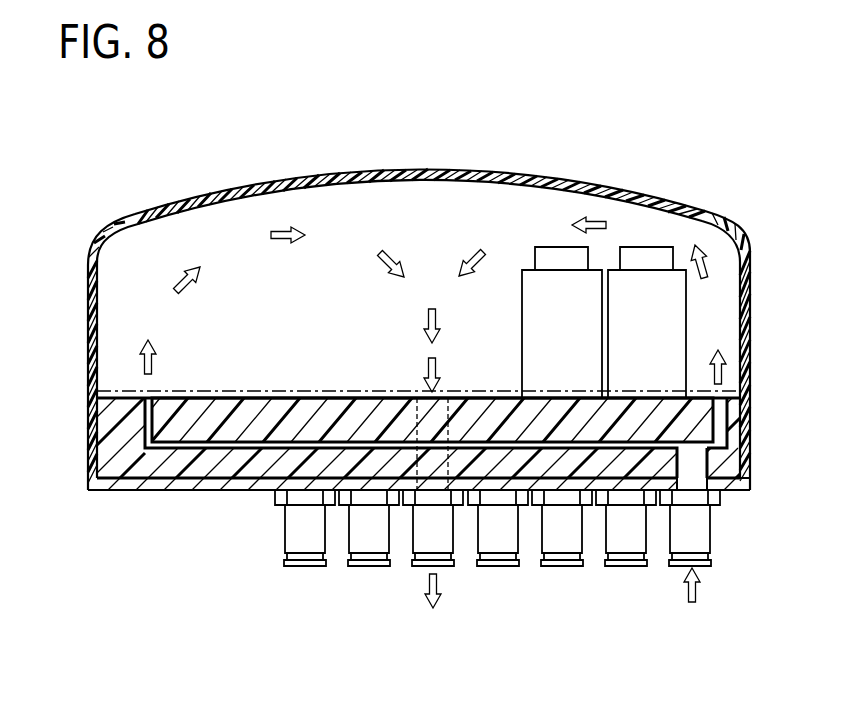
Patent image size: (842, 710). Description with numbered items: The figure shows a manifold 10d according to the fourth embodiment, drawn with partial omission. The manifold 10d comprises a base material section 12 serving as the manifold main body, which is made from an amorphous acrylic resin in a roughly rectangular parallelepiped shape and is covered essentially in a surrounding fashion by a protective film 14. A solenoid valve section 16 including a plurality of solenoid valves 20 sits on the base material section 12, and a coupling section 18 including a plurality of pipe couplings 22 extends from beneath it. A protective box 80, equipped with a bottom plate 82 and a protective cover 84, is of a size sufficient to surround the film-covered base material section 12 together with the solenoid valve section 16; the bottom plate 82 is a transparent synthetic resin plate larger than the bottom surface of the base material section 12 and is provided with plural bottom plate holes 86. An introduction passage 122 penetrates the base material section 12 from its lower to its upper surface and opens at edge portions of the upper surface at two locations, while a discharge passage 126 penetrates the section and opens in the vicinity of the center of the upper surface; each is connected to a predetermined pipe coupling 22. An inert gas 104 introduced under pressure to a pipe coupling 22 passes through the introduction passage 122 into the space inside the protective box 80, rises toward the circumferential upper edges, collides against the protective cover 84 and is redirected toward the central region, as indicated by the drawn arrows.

The manifold 10d is at (277, 155).
The protective box 80 is at (612, 146).
The solenoid valve section 16 is at (717, 253).
The protective cover 84 is at (88, 343).
The bottom plate 82 is at (113, 492).
The bottom plate holes 86 is at (710, 506).
The solenoid valve 20 is at (668, 340).
The base material section 12 is at (732, 412).
The introduction passage 122 is at (692, 446).
The protective film 14 is at (212, 392).
The discharge passage 126 is at (402, 408).
The pipe coupling 22 is at (705, 533).
The coupling section 18 is at (557, 607).
The inert gas 104 is at (697, 598).